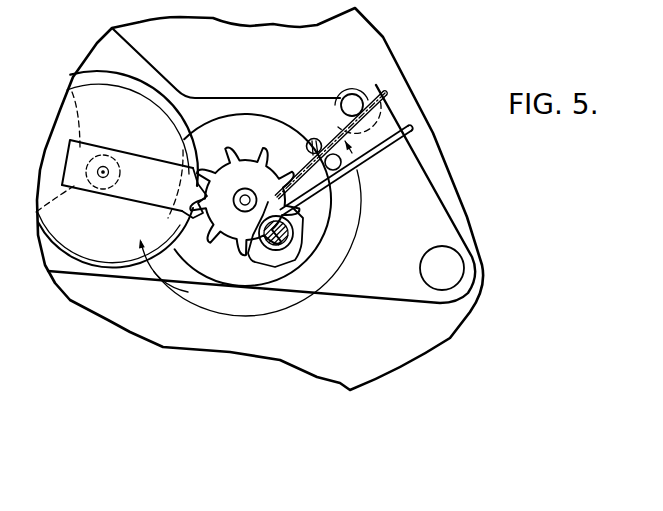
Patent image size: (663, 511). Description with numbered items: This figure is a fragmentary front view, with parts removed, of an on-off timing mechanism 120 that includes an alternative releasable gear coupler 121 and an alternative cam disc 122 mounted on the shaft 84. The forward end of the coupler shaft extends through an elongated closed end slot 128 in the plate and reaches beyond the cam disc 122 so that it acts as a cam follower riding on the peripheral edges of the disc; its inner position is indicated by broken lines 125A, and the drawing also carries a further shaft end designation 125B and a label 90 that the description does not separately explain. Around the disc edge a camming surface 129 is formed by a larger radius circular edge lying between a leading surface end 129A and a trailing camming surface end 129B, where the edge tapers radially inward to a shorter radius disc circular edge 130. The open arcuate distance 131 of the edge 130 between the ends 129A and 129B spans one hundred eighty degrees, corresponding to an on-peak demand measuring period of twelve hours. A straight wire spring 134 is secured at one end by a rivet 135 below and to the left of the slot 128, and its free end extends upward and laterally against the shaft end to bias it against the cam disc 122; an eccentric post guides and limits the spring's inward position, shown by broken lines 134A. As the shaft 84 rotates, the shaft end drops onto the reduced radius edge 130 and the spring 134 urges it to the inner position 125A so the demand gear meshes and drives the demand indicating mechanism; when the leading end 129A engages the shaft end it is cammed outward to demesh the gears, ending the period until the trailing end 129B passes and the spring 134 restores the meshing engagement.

The shaft 84 is at (242, 216).
The pivoted arm with pawl 90 is at (138, 196).
The on-off timing mechanism 120 is at (400, 226).
The releasable gear coupler 121 is at (402, 97).
The cam disc 122 is at (261, 116).
The inner position of forward shaft end 125A is at (311, 137).
The guide pin 125B is at (341, 166).
The elongated closed end slot 128 is at (328, 148).
The camming surface 129 is at (174, 284).
The leading surface end 129A is at (165, 225).
The trailing camming surface end 129B is at (311, 138).
The shorter radius disc circular edge 130 is at (240, 107).
The open arcuate distance 131 is at (296, 305).
The straight wire spring 134 is at (404, 132).
The inward position of spring 134A is at (381, 93).
The rivet 135 is at (280, 235).